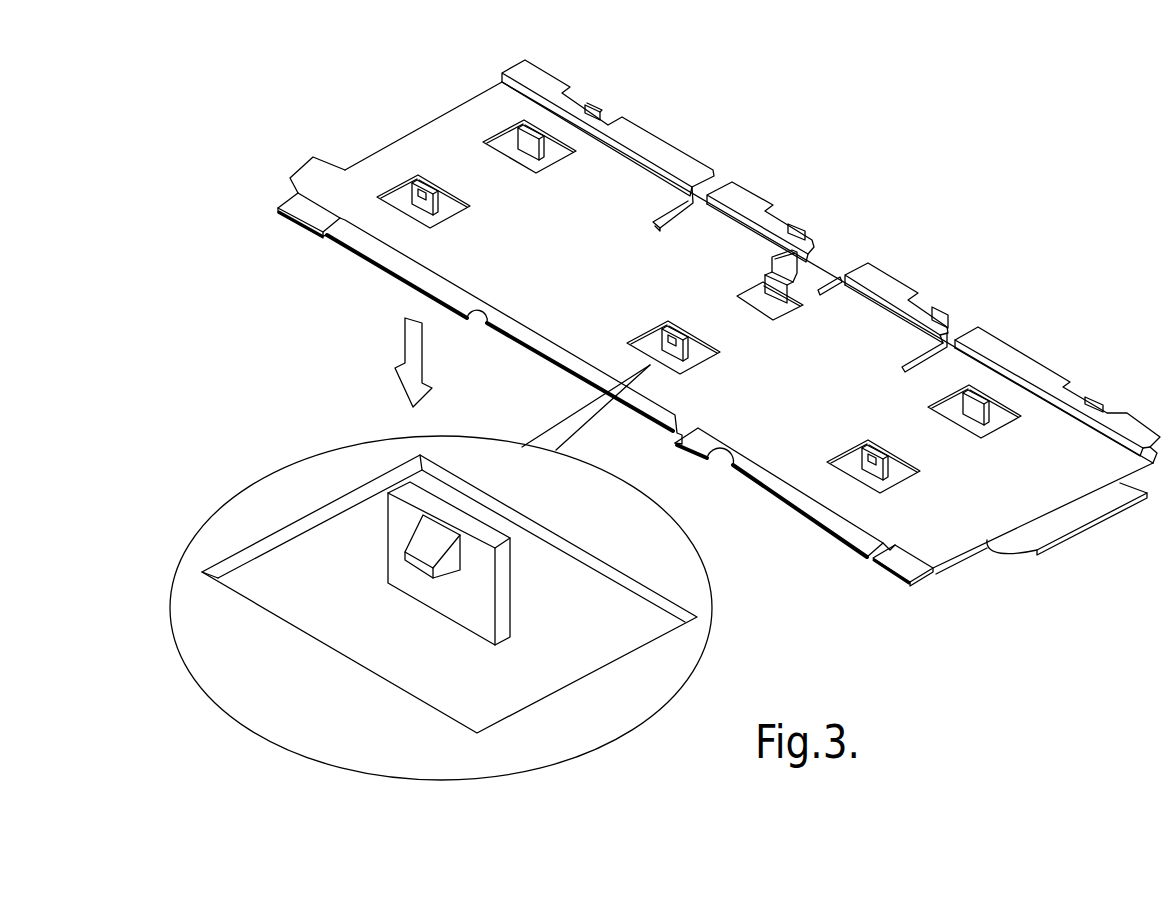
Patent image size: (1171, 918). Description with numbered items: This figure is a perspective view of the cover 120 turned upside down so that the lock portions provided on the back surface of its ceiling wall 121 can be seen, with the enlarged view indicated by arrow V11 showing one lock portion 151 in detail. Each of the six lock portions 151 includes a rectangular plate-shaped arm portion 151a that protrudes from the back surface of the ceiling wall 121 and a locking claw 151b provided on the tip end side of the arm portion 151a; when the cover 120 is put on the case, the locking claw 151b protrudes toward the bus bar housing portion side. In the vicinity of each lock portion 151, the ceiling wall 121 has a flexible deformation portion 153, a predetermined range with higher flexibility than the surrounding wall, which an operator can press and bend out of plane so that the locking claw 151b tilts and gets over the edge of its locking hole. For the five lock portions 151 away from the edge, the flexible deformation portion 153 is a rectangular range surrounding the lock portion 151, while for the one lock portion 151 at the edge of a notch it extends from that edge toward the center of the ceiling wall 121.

The cover 120 is at (1027, 136).
The ceiling wall 121 is at (618, 178).
The lock portion 151 is at (513, 137).
The arm portion 151a is at (513, 592).
The locking claw 151b is at (427, 547).
The flexible deformation portion 153 is at (547, 157).
The viewing direction V11 is at (405, 345).